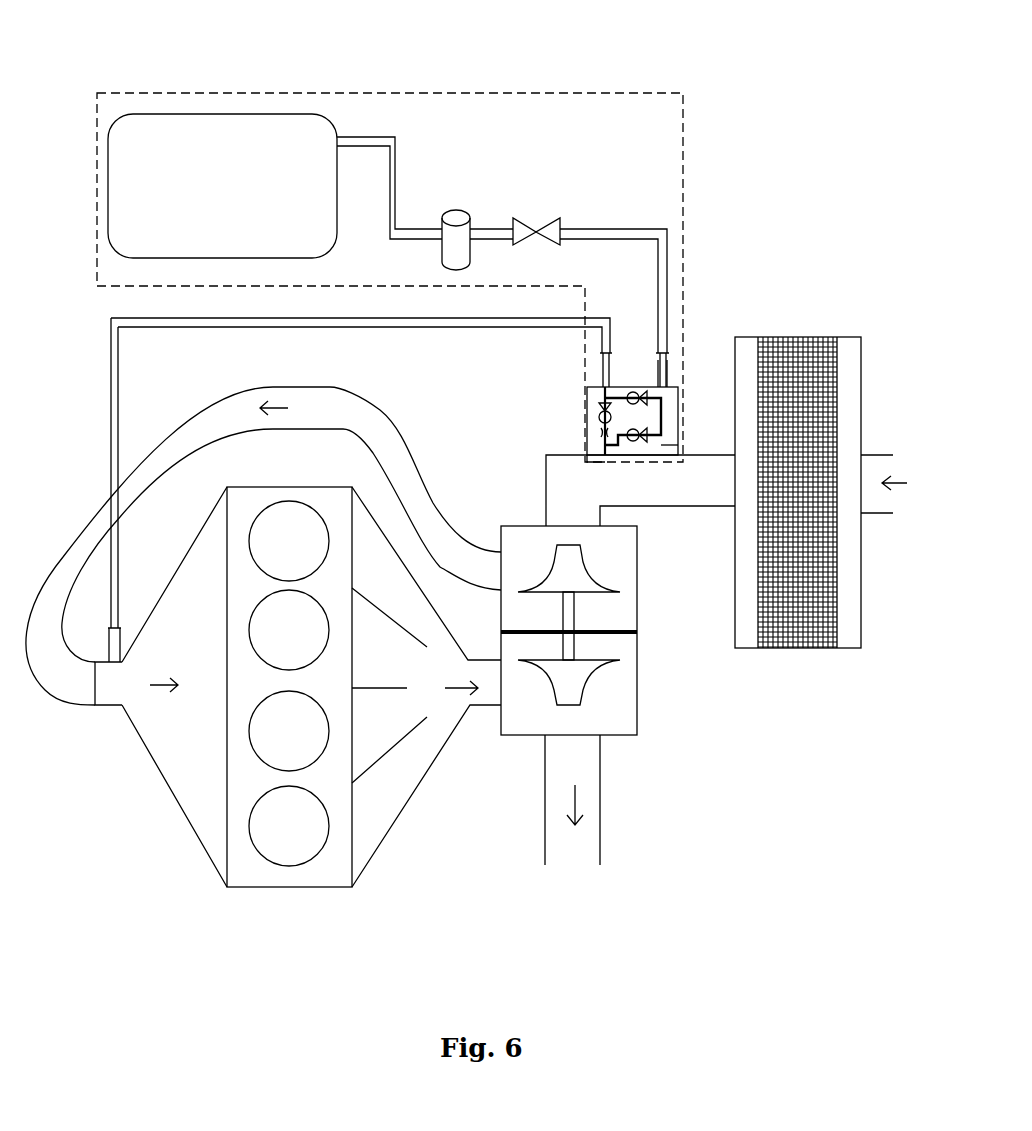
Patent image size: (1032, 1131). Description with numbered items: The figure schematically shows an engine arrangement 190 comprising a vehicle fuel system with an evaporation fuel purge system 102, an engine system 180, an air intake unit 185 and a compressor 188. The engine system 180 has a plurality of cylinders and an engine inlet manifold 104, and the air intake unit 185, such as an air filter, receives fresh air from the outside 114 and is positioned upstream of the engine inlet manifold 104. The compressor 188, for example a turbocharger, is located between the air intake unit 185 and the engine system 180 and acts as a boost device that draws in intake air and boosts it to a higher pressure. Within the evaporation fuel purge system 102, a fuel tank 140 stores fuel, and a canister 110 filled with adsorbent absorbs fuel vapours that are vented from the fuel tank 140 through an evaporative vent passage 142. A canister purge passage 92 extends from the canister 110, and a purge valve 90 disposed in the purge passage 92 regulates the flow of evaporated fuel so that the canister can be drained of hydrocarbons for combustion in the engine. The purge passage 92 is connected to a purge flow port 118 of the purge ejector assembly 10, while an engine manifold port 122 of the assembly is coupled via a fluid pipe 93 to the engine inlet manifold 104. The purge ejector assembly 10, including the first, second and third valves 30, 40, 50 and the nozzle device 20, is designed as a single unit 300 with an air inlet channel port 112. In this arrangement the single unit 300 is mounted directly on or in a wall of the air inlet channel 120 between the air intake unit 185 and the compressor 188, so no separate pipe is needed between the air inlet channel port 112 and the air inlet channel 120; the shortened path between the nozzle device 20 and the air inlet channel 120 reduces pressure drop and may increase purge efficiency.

The purge ejector assembly 10 is at (597, 403).
The single unit 300 is at (557, 410).
The nozzle device 20 is at (600, 437).
The first valve 30 is at (600, 418).
The second valve 40 is at (631, 392).
The third valve 50 is at (673, 443).
The purge valve 90 is at (536, 232).
The canister purge passage 92 is at (607, 233).
The fluid pipe 93 is at (111, 420).
The evaporation fuel purge system 102 is at (683, 131).
The engine inlet manifold 104 is at (178, 755).
The canister 110 is at (457, 218).
The air inlet channel port 112 is at (590, 462).
The fresh air from the outside 114 is at (903, 465).
The purge flow port 118 is at (665, 370).
The air inlet channel 120 is at (695, 510).
The engine manifold port 122 is at (607, 372).
The fuel tank 140 is at (279, 133).
The evaporative vent passage 142 is at (374, 142).
The engine system 180 is at (250, 868).
The air intake unit 185 is at (848, 345).
The compressor 188 is at (627, 708).
The engine arrangement 190 is at (834, 118).